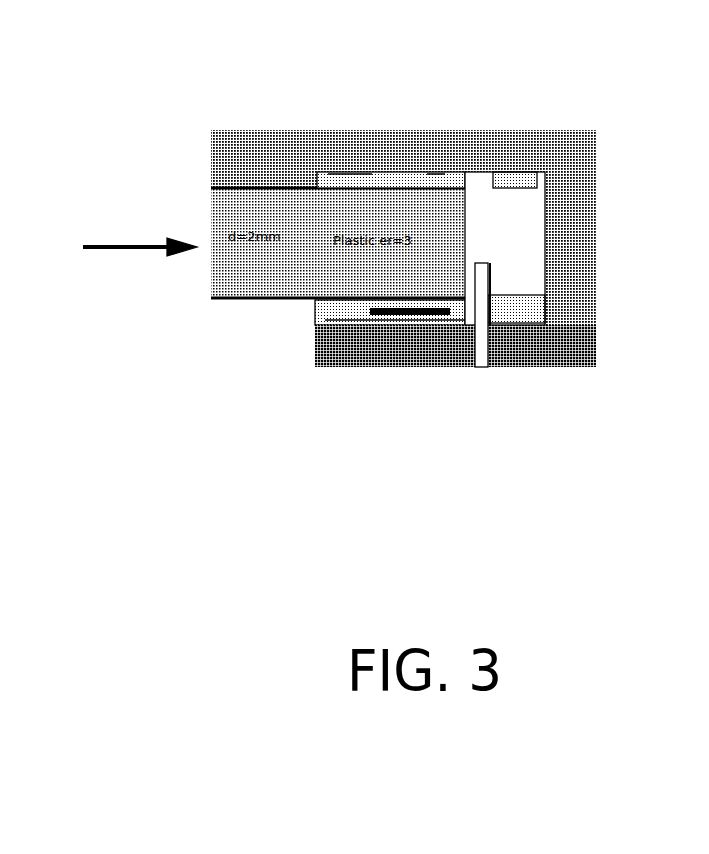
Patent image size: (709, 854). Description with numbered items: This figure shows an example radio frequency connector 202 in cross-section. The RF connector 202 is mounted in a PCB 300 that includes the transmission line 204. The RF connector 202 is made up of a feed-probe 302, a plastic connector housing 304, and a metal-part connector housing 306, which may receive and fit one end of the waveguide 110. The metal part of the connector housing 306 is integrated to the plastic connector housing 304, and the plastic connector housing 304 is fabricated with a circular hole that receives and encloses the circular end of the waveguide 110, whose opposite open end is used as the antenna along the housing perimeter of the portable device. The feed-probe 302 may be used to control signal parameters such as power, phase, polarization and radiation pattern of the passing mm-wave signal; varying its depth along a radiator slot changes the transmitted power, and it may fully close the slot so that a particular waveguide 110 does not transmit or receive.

The waveguide 110 is at (139, 235).
The RF connector 202 is at (387, 146).
The transmission line 204 is at (402, 366).
The PCB 300 is at (315, 350).
The feed-probe 302 is at (455, 298).
The plastic connector housing 304 is at (530, 240).
The metal-part connector housing 306 is at (535, 186).